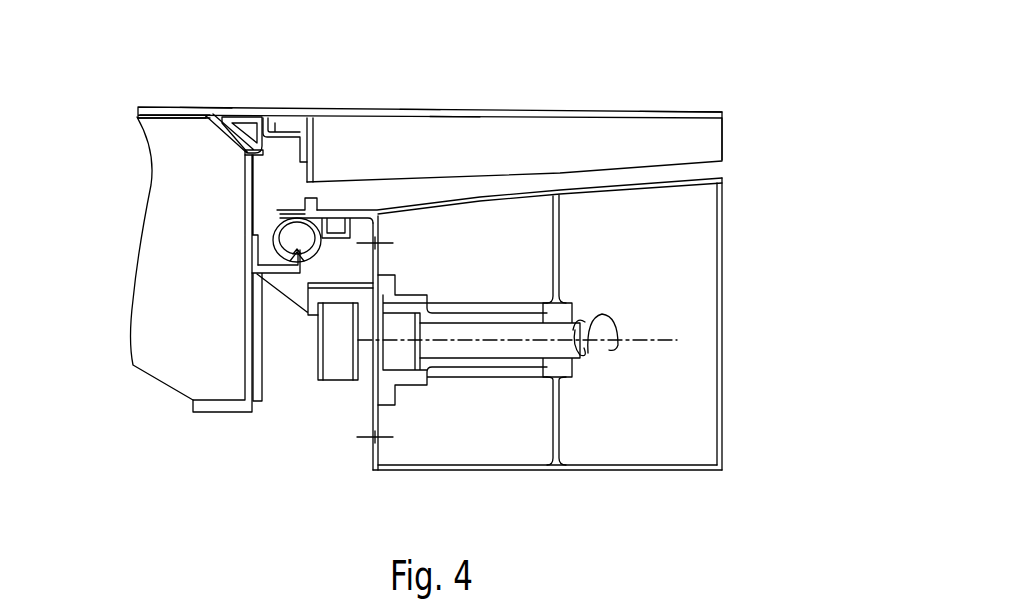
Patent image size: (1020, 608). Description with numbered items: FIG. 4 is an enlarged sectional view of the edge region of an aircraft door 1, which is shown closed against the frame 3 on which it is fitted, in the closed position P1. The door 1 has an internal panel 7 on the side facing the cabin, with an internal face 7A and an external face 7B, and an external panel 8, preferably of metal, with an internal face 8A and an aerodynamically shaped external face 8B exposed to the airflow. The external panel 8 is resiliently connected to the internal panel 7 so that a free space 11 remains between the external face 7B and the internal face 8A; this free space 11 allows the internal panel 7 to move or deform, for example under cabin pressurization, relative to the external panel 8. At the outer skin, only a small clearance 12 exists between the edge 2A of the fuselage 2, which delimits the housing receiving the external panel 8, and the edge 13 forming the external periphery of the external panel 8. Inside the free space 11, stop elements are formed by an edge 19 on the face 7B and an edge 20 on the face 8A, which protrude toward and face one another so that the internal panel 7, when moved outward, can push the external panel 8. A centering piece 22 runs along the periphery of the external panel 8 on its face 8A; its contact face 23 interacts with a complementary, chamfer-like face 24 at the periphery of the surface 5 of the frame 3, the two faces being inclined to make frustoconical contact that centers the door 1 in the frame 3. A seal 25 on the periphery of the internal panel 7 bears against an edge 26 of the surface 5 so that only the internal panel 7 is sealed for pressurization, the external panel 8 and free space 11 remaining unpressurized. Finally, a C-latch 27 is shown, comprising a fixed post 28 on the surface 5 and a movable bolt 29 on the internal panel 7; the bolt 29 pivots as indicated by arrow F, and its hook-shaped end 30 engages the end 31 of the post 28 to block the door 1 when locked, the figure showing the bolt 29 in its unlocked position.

The door 1 is at (661, 93).
The closed position P1 is at (747, 96).
The fuselage 2 is at (155, 111).
The edge of the fuselage 2A is at (199, 107).
The frame 3 is at (167, 217).
The surface of the frame 5 is at (265, 194).
The internal panel 7 is at (655, 239).
The internal face of the internal panel 7A is at (674, 478).
The external face of the internal panel 7B is at (653, 171).
The external panel 8 is at (373, 108).
The internal face of the external panel 8A is at (452, 132).
The external face of the external panel 8B is at (418, 135).
The free space 11 is at (446, 175).
The clearance 12 is at (206, 97).
The edge of the external panel 13 is at (216, 98).
The edge on the internal panel 19 is at (304, 201).
The edge on the external panel 20 is at (314, 158).
The centering piece 22 is at (265, 117).
The contact face 23 is at (230, 147).
The complementary face 24 is at (235, 120).
The seal 25 is at (308, 252).
The edge of the surface 26 is at (274, 269).
The latch 27 is at (324, 413).
The fixed post 28 is at (308, 314).
The movable bolt 29 is at (369, 373).
The end of the bolt 30 is at (348, 294).
The end of the post 31 is at (318, 372).
The arrow F is at (615, 318).